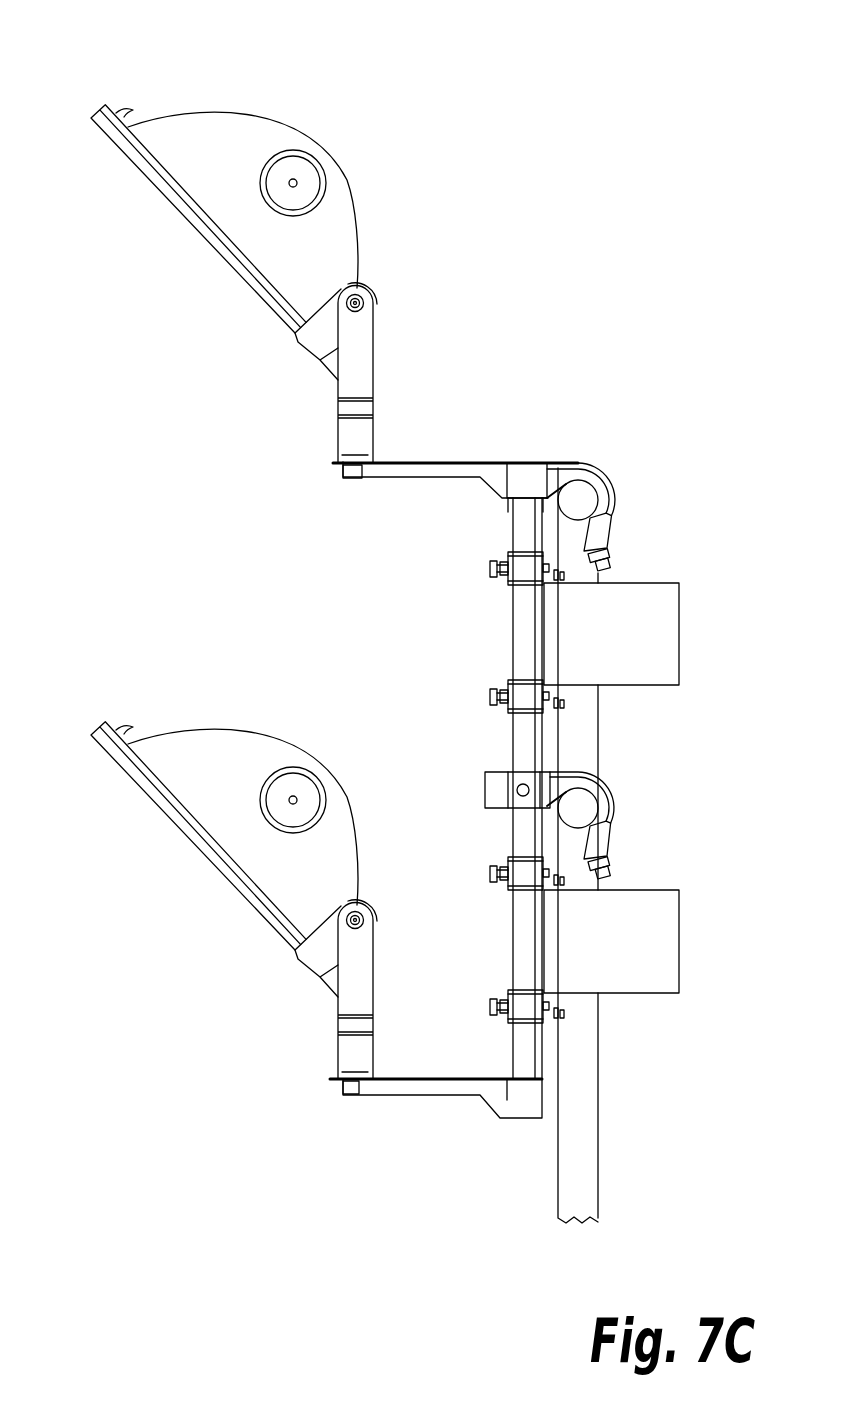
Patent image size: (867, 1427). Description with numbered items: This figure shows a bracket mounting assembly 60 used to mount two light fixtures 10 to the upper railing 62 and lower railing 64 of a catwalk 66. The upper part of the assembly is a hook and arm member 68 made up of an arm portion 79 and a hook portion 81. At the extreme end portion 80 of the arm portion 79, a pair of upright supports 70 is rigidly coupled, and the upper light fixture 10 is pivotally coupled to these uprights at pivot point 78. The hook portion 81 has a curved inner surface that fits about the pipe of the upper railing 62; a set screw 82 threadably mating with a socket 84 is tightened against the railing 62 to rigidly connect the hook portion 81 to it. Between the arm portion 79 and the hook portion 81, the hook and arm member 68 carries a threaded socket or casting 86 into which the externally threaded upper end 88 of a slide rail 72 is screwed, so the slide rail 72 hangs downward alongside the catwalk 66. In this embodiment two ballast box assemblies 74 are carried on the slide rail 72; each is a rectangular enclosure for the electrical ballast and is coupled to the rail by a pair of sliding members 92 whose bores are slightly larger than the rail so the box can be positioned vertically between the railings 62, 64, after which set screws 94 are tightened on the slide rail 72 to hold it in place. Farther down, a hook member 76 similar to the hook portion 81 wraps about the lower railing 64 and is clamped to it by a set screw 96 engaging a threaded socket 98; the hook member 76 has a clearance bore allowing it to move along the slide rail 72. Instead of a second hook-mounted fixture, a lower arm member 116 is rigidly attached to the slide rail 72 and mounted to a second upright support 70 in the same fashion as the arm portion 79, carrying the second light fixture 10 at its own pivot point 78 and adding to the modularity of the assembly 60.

The light fixture 10 is at (224, 726).
The mounting assembly 60 is at (589, 841).
The upper railing 62 is at (574, 495).
The lower railing 64 is at (588, 770).
The catwalk 66 is at (552, 1175).
The hook and arm member 68 is at (474, 463).
The upright support 70 is at (354, 346).
The slide rail 72 is at (507, 745).
The ballast box assembly 74 is at (659, 788).
The hook member 76 is at (603, 795).
The pivot point 78 is at (362, 299).
The arm portion 79 is at (402, 470).
The extreme end portion 80 is at (342, 476).
The hook portion 81 is at (603, 473).
The set screw 82 is at (632, 560).
The socket 84 is at (613, 527).
The threaded socket or casting 86 is at (518, 482).
The upper end of slide rail 88 is at (512, 509).
The sliding members 92 is at (508, 680).
The set screws 94 is at (490, 695).
The set screw 96 is at (617, 882).
The threaded socket 98 is at (613, 853).
The lower arm member 116 is at (521, 938).